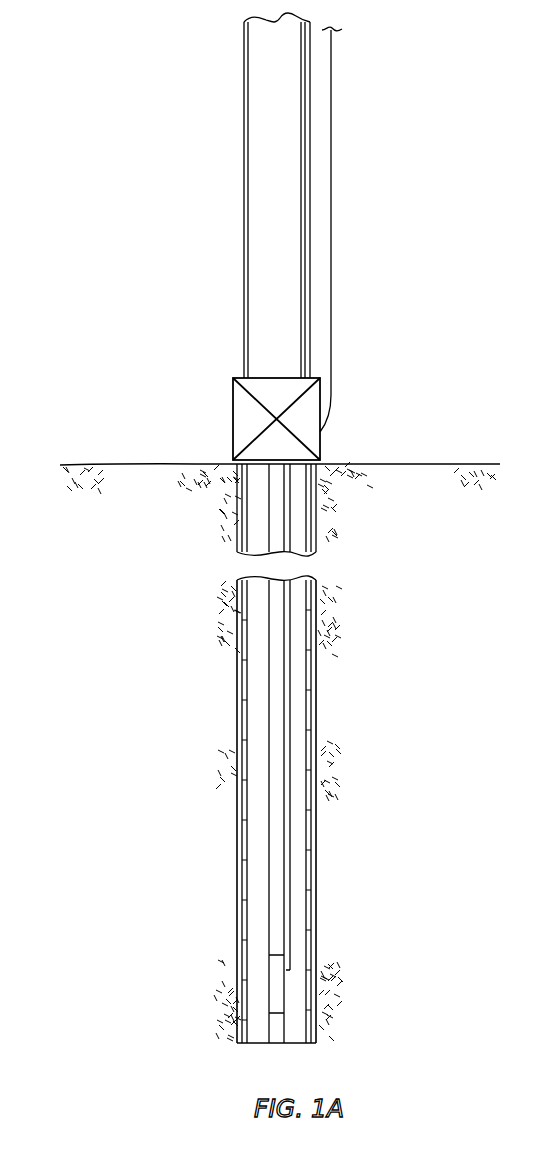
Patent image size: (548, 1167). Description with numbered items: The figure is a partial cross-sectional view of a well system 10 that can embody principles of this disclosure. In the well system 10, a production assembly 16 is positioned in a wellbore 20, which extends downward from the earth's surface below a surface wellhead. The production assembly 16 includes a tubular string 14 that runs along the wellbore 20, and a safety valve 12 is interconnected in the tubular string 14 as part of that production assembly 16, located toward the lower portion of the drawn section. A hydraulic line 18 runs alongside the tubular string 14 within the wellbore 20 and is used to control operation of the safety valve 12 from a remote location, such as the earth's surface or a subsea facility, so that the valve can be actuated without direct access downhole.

The well system 10 is at (147, 110).
The safety valve 12 is at (288, 992).
The tubular string 14 is at (269, 685).
The production assembly 16 is at (344, 674).
The hydraulic line 18 is at (291, 838).
The wellbore 20 is at (257, 839).